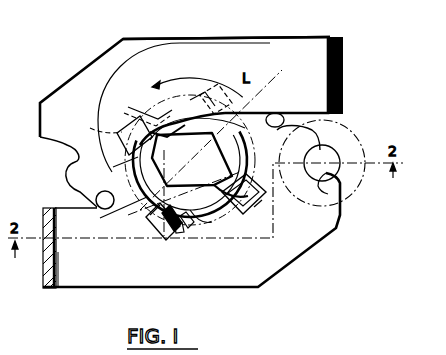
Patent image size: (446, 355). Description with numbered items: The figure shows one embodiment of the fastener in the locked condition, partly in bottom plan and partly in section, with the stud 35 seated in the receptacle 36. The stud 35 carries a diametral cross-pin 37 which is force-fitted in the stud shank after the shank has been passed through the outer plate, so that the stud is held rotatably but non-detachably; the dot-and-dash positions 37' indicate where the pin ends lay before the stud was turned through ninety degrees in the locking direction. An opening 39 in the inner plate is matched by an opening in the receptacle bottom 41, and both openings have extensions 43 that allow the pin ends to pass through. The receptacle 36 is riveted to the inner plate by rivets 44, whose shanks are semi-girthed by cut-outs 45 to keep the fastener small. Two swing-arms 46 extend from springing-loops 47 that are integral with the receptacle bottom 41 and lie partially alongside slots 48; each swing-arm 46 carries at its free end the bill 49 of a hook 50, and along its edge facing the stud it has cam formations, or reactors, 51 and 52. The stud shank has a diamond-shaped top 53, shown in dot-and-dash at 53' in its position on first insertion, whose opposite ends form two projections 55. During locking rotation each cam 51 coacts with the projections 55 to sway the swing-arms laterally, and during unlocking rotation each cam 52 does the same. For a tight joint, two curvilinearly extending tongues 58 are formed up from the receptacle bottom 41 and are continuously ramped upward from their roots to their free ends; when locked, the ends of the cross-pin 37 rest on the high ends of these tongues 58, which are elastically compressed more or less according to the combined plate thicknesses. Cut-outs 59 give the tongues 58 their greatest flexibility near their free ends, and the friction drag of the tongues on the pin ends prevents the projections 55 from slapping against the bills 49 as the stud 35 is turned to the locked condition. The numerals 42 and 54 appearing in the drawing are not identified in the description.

The stud 35 is at (204, 204).
The receptacle 36 is at (346, 92).
The cross-pin 37 is at (200, 227).
The dot-and-dash positions of pin ends 37' is at (95, 125).
The opening 39 is at (255, 143).
The receptacle bottom 41 is at (135, 45).
The pin 42 is at (184, 224).
The extensions 43 is at (121, 130).
The rivets 44 is at (337, 146).
The cut-outs 45 is at (78, 154).
The swing-arms 46 is at (258, 50).
The springing-loops 47 is at (315, 54).
The slots 48 is at (283, 118).
The bill 49 is at (110, 202).
The hook 50 is at (136, 120).
The cam 51 is at (190, 122).
The cam 52 is at (167, 136).
The diamond-shaped top 53 is at (192, 159).
The dot-and-dash position of diamond 53' is at (207, 149).
The pin 54 is at (116, 214).
The projections 55 is at (260, 172).
The tongues 58 is at (150, 206).
The cut-outs 59 is at (180, 235).